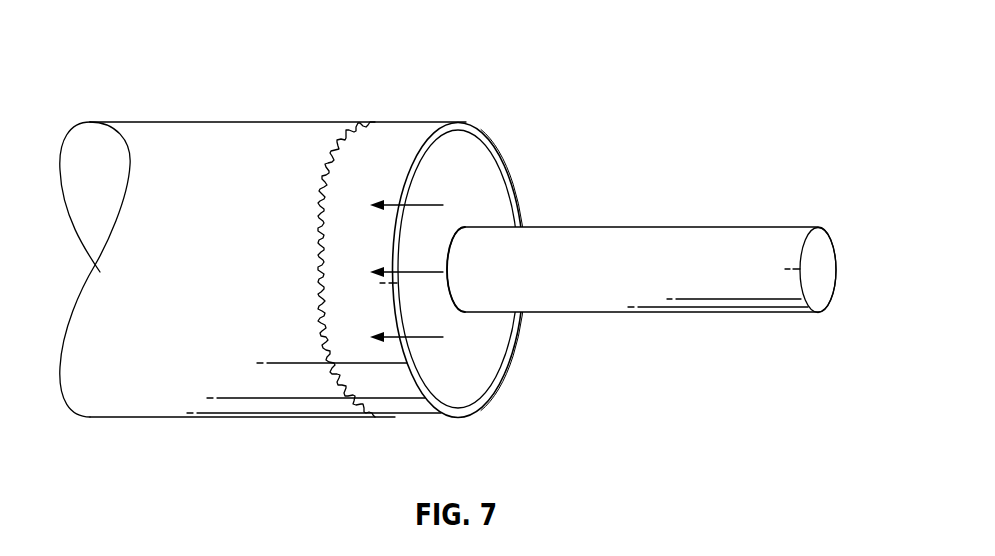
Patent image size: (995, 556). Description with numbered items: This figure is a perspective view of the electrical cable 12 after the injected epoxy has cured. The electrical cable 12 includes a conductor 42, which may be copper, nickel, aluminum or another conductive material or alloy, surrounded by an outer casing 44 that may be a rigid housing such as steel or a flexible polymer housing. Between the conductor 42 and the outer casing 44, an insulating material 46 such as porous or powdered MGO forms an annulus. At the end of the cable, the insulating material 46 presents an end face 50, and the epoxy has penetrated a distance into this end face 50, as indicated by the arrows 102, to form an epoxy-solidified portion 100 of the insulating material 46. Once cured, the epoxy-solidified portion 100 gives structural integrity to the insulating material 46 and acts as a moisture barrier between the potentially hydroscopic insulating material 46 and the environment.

The electrical cable 12 is at (448, 209).
The conductor 42 is at (627, 227).
The outer casing 44 is at (435, 121).
The insulating material 46 is at (228, 137).
The end face 50 is at (504, 209).
The epoxy-solidified portion 100 is at (378, 134).
The arrows 102 is at (420, 203).